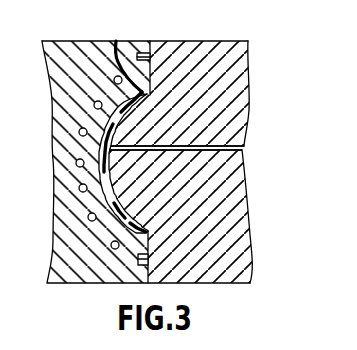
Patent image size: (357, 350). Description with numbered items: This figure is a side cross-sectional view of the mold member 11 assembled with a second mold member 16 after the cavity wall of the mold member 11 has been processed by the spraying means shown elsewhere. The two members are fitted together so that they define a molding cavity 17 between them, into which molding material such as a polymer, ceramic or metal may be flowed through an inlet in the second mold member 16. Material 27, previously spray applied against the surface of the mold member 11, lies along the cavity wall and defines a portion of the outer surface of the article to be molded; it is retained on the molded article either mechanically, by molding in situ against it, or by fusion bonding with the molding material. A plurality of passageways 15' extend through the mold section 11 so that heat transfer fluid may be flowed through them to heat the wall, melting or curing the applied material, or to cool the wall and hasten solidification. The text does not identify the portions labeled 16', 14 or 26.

The mold member 11 is at (87, 51).
The second mold member 16 is at (179, 77).
The second body member (lower portion) 16' is at (197, 216).
The passageways 15' is at (208, 133).
The molding cavity 17 is at (119, 13).
The material 27 is at (103, 165).
The body member (partially shown) 14 is at (6, 129).
The body member (partially shown) 26 is at (7, 247).